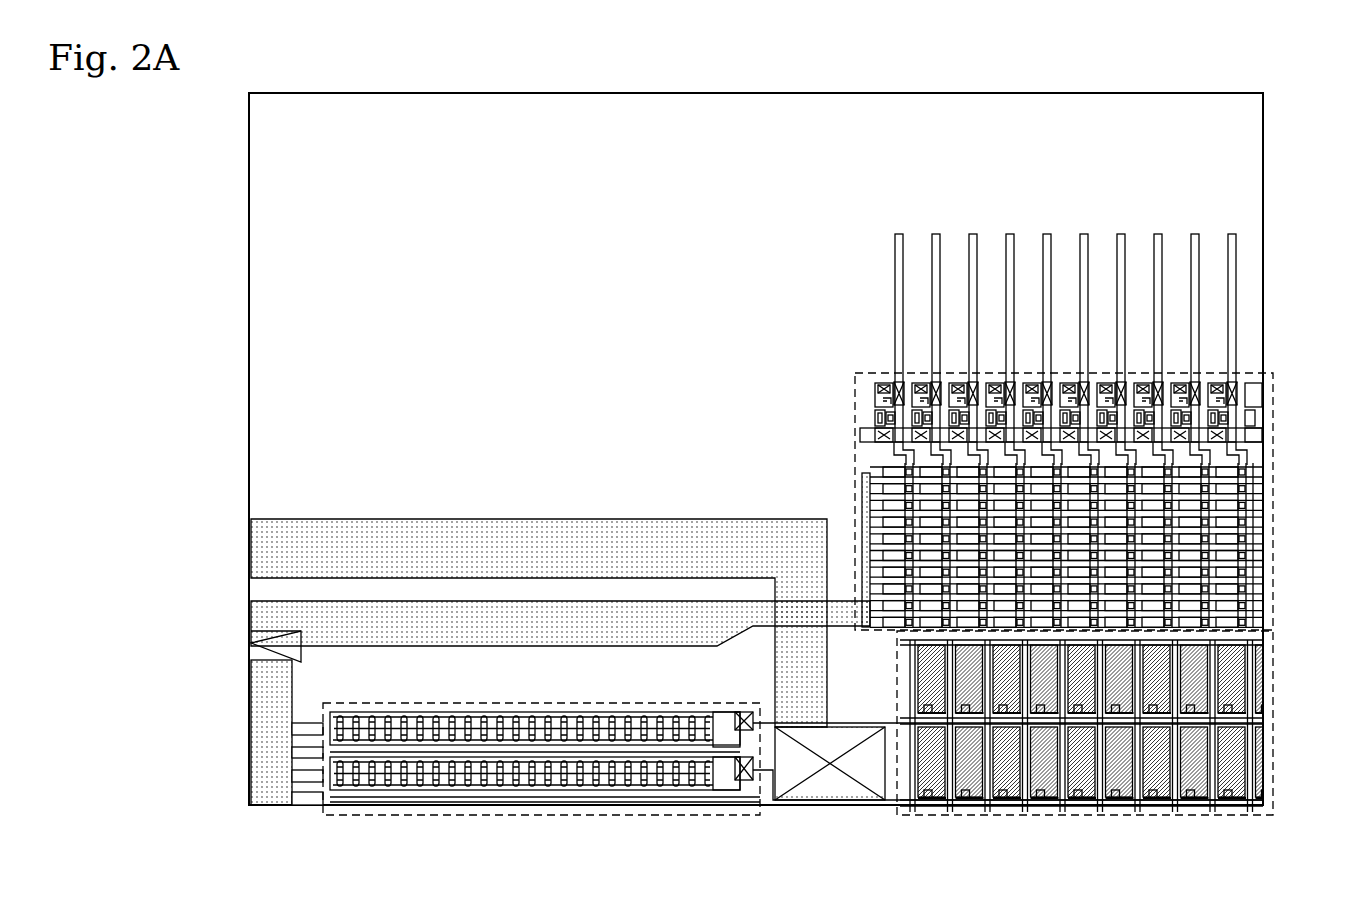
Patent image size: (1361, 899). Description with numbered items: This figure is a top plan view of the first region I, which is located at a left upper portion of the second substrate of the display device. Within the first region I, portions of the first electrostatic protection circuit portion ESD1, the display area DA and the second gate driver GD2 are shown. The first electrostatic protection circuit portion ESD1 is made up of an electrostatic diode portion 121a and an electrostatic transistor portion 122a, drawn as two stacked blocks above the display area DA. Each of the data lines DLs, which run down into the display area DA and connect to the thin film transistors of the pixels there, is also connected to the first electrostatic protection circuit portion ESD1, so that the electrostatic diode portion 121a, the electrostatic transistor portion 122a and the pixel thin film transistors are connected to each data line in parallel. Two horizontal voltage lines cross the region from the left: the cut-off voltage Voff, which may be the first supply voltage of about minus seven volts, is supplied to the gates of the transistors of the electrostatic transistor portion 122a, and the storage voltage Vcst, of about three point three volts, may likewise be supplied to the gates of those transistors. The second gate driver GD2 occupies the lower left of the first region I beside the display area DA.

The first region I is at (247, 177).
The data lines DLs is at (1237, 223).
The electrostatic diode portion 121a is at (1283, 382).
The first electrostatic protection circuit portion ESD1 is at (1273, 452).
The electrostatic transistor portion 122a is at (1283, 462).
The display area DA is at (1273, 690).
The second gate driver GD2 is at (665, 815).
The storage voltage Vcst is at (538, 563).
The cut-off voltage Voff is at (538, 633).